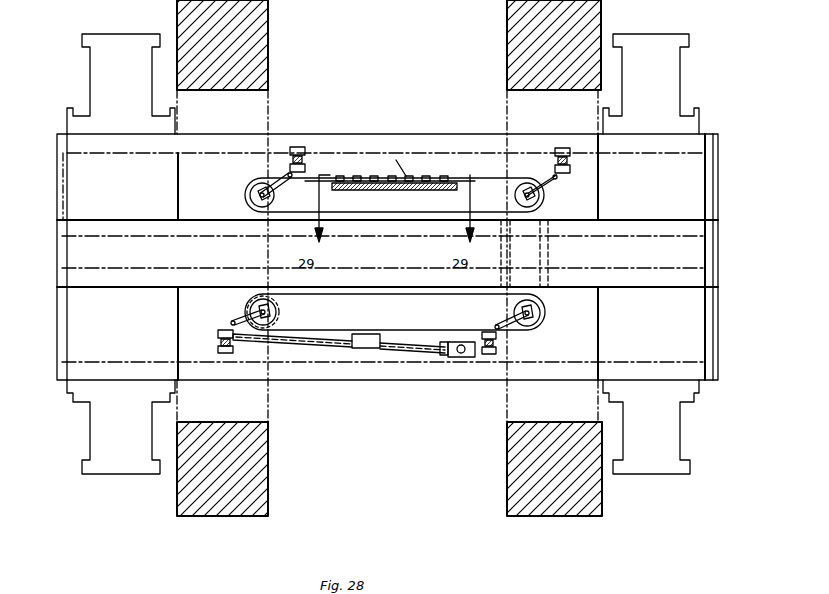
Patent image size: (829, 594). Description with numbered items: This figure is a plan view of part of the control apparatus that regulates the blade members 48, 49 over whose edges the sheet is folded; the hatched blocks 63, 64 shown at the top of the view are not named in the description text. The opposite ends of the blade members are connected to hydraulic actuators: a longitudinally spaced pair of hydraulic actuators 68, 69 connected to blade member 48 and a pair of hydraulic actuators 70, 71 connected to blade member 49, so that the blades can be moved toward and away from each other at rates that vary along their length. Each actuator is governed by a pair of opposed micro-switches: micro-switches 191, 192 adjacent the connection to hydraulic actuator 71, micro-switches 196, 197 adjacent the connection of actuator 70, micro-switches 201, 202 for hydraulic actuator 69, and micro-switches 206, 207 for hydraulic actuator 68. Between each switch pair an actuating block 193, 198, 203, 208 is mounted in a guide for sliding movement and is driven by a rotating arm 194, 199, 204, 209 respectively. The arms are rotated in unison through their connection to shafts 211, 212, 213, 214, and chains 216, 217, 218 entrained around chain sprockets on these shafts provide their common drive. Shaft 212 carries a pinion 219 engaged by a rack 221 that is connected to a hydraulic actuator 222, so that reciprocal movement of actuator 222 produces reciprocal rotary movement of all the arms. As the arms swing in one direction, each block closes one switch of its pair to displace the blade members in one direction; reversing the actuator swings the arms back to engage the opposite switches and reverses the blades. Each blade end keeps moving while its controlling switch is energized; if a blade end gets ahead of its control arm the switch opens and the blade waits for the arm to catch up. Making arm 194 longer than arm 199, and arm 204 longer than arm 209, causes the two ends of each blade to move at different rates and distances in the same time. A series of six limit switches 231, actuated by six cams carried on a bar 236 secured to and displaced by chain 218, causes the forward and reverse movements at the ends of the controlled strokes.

The blade member 48 is at (705, 270).
The blade member 49 is at (705, 246).
The upper left support block 63 is at (268, 46).
The upper right support block 64 is at (507, 47).
The hydraulic actuator 68 is at (90, 62).
The hydraulic actuator 69 is at (680, 68).
The hydraulic actuator 70 is at (90, 430).
The hydraulic actuator 71 is at (680, 432).
The micro-switch 191 is at (488, 354).
The micro-switch 192 is at (482, 334).
The actuating block 193 is at (485, 343).
The rotating arm 194 is at (497, 325).
The micro-switch 196 is at (222, 353).
The micro-switch 197 is at (218, 332).
The actuator block 198 is at (221, 342).
The arm 199 is at (233, 322).
The micro-switch 201 is at (555, 152).
The micro-switch 202 is at (570, 176).
The actuator block 203 is at (567, 160).
The arm 204 is at (553, 176).
The micro-switch 206 is at (305, 150).
The micro-switch 207 is at (305, 170).
The actuator block 208 is at (293, 159).
The arm 209 is at (278, 190).
The shaft 211 is at (530, 316).
The shaft 212 is at (263, 294).
The shaft 213 is at (510, 191).
The shaft 214 is at (262, 197).
The chain 216 is at (393, 297).
The chain 217 is at (548, 265).
The chain 218 is at (421, 205).
The pinion 219 is at (280, 318).
The rack 221 is at (300, 345).
The hydraulic actuator 222 is at (420, 350).
The limit switches 231 is at (392, 176).
The bar 236 is at (396, 160).